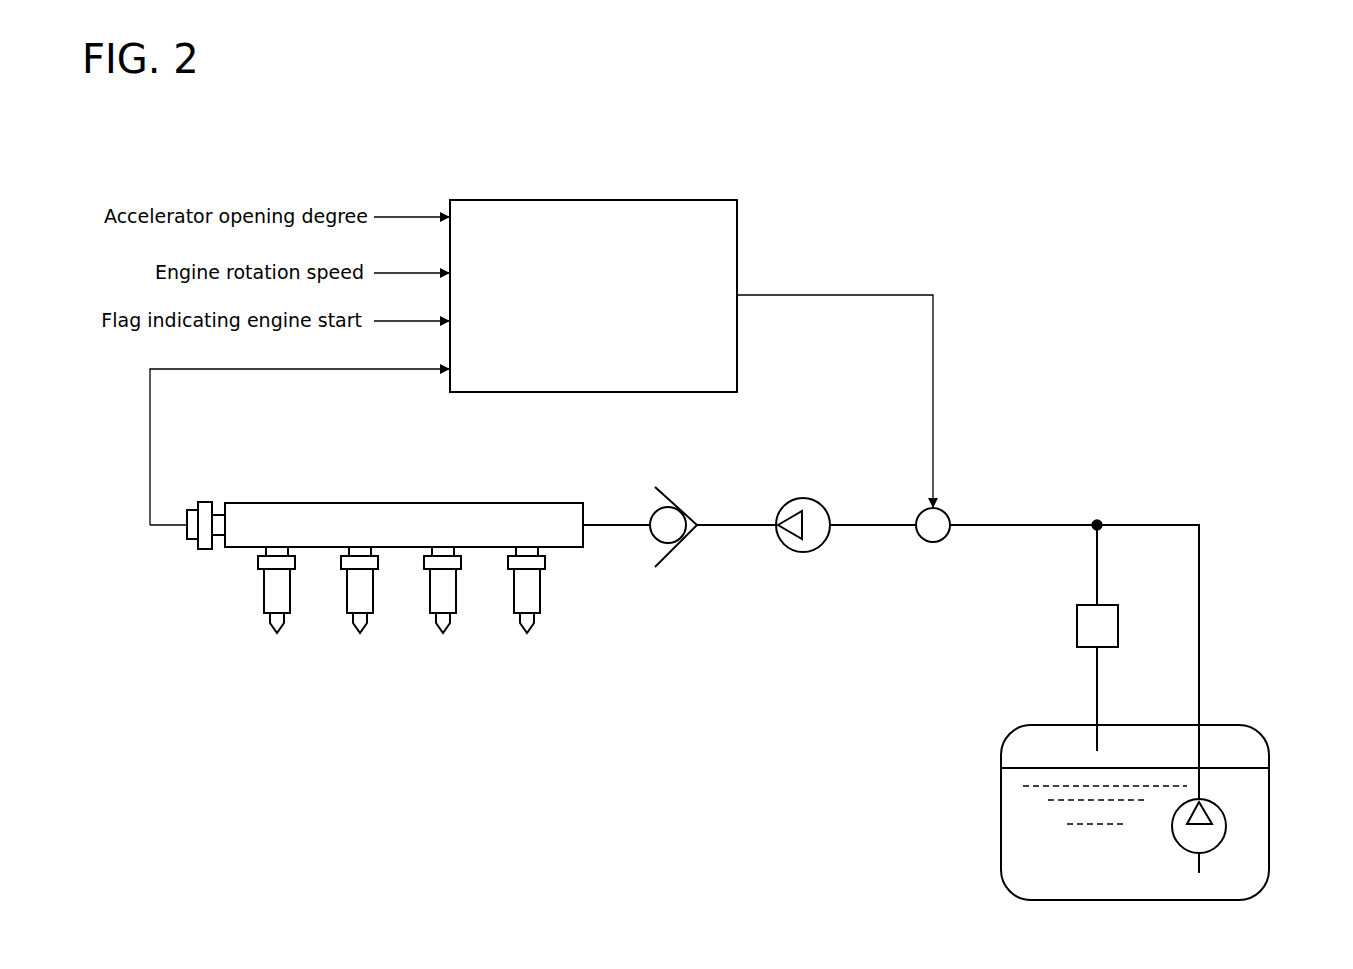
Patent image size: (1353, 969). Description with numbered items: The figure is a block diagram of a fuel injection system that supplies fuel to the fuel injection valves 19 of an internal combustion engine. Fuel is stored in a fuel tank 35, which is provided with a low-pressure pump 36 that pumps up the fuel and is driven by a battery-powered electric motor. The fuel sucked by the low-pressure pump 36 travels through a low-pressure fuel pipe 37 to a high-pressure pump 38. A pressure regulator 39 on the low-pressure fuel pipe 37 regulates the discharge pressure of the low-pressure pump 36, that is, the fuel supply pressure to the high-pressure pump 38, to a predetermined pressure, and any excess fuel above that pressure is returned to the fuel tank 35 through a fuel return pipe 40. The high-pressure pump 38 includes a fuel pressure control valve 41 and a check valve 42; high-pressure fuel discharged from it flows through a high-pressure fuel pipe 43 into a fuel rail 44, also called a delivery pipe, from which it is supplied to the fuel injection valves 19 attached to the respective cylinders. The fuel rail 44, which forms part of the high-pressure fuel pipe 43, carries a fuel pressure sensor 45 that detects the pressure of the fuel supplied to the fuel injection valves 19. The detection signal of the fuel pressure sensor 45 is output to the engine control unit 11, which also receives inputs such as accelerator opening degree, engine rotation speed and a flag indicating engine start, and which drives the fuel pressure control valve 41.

The engine control unit 11 is at (690, 213).
The fuel injection valve 19 is at (276, 634).
The fuel tank 35 is at (1245, 725).
The low-pressure pump 36 is at (1222, 828).
The low-pressure fuel pipe 37 is at (1167, 524).
The high-pressure pump 38 is at (801, 555).
The pressure regulator 39 is at (1090, 628).
The fuel return pipe 40 is at (1096, 686).
The fuel pressure control valve 41 is at (931, 543).
The check valve 42 is at (672, 562).
The high-pressure fuel pipe 43 is at (724, 522).
The fuel rail 44 is at (455, 516).
The fuel pressure sensor 45 is at (205, 551).